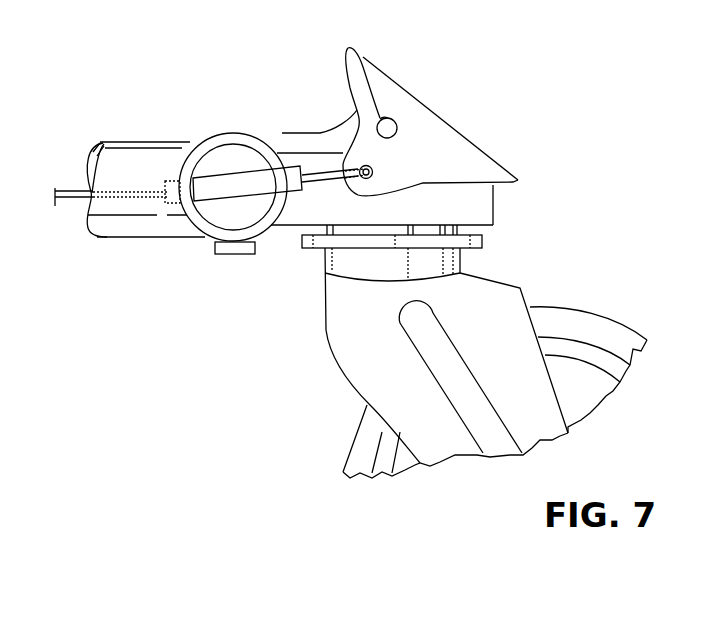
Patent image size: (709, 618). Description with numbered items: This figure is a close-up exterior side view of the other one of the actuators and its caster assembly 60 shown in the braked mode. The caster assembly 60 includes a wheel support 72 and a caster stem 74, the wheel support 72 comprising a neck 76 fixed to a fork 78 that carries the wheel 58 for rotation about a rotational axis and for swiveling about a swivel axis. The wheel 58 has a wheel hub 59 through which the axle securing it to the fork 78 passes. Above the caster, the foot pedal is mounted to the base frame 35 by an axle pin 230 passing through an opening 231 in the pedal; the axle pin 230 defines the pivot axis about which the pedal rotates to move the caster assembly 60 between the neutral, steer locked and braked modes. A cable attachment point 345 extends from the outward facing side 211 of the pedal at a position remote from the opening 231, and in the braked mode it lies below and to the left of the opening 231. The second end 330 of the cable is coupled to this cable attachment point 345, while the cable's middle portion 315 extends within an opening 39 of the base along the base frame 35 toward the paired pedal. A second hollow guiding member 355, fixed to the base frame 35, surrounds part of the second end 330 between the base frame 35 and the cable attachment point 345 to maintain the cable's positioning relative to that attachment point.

The base frame 35 is at (132, 157).
The opening 39 is at (73, 172).
The middle portion 315 is at (77, 198).
The second end 330 is at (323, 175).
The second hollow guiding member 355 is at (238, 182).
The cable attachment point 345 is at (380, 158).
The caster assembly 60 is at (501, 63).
The outward facing side 211 is at (363, 70).
The opening 231 is at (382, 118).
The axle pin 230 is at (397, 127).
The caster stem 74 is at (347, 258).
The neck 76 is at (357, 325).
The wheel support 72 is at (612, 284).
The fork 78 is at (437, 445).
The wheel 58 is at (610, 337).
The wheel hub 59 is at (573, 393).